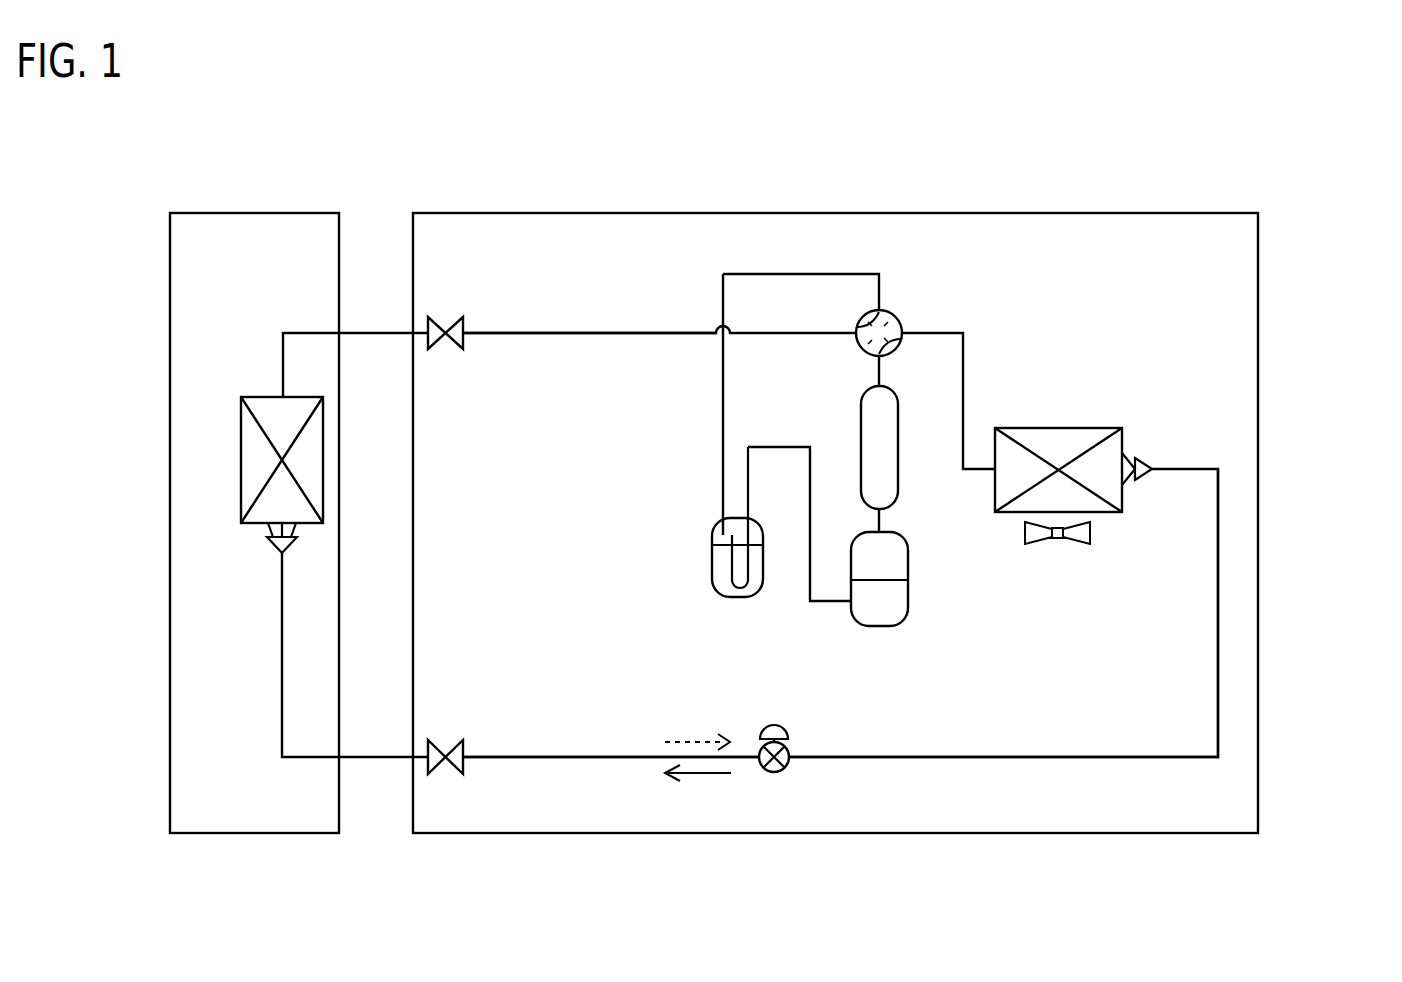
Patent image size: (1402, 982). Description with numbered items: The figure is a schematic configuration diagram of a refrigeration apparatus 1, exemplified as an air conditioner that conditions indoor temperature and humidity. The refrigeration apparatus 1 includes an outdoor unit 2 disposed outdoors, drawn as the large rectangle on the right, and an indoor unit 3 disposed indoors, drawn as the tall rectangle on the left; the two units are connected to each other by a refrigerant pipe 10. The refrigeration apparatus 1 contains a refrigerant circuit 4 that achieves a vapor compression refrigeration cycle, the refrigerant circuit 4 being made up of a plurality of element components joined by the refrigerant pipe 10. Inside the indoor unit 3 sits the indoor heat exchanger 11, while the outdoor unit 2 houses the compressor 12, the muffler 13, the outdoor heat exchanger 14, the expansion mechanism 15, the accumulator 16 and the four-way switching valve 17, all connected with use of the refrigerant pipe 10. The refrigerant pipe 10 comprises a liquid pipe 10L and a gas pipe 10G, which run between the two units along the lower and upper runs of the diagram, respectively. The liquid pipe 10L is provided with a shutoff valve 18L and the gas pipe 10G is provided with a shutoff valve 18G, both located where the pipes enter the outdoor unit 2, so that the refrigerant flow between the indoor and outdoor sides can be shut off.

The refrigeration apparatus 1 is at (1058, 185).
The outdoor unit 2 is at (599, 212).
The indoor unit 3 is at (230, 212).
The refrigerant circuit 4 is at (645, 318).
The refrigerant pipe 10 is at (373, 336).
The gas pipe 10G is at (549, 331).
The liquid pipe 10L is at (583, 755).
The indoor heat exchanger 11 is at (240, 452).
The compressor 12 is at (908, 615).
The muffler 13 is at (898, 487).
The outdoor heat exchanger 14 is at (1068, 427).
The expansion mechanism 15 is at (760, 724).
The accumulator 16 is at (711, 565).
The four-way switching valve 17 is at (897, 316).
The shutoff valve 18G is at (453, 351).
The shutoff valve 18L is at (456, 739).